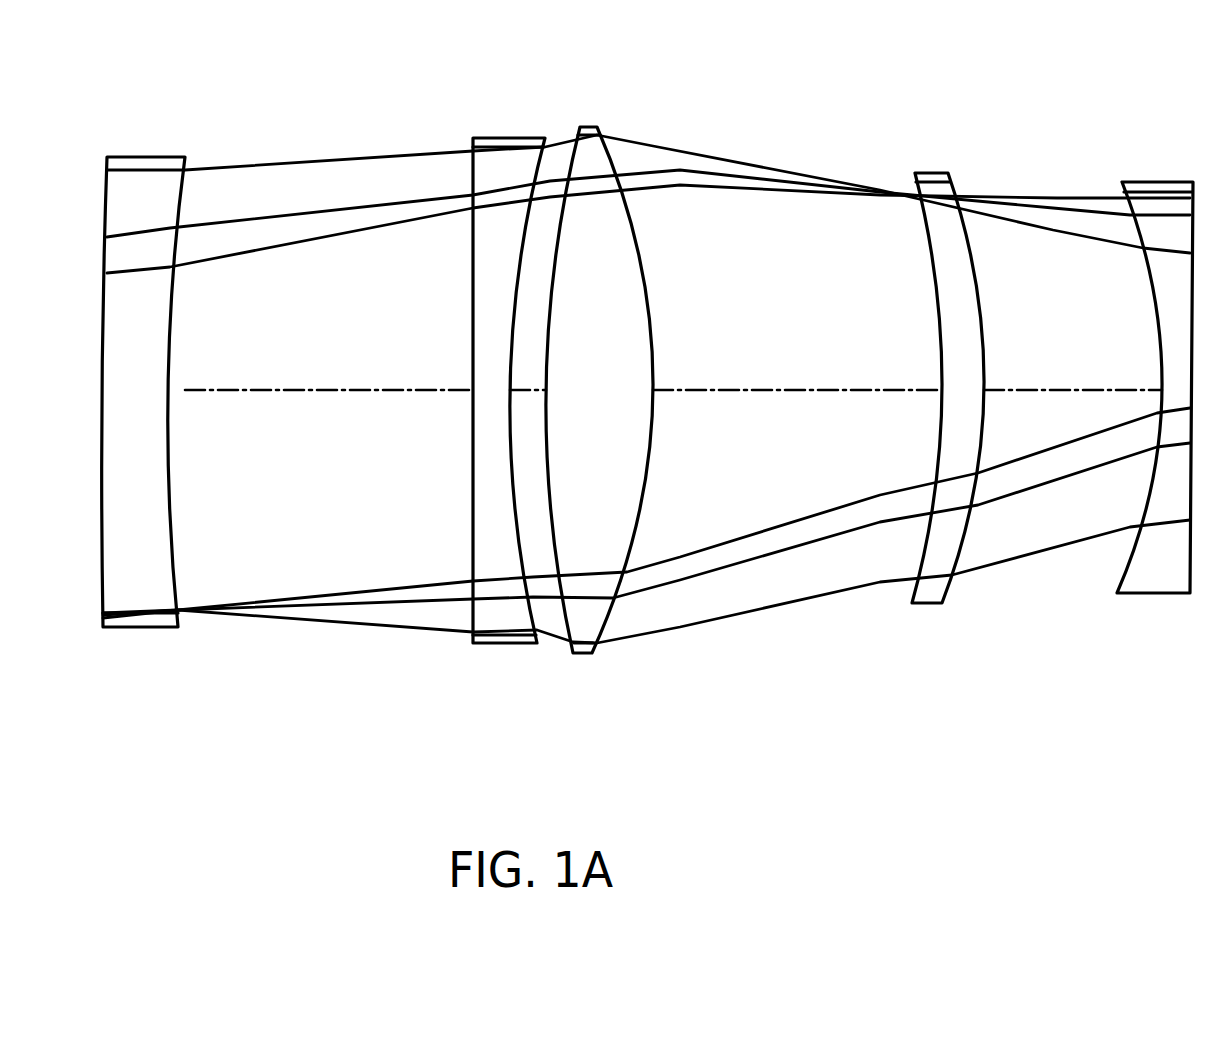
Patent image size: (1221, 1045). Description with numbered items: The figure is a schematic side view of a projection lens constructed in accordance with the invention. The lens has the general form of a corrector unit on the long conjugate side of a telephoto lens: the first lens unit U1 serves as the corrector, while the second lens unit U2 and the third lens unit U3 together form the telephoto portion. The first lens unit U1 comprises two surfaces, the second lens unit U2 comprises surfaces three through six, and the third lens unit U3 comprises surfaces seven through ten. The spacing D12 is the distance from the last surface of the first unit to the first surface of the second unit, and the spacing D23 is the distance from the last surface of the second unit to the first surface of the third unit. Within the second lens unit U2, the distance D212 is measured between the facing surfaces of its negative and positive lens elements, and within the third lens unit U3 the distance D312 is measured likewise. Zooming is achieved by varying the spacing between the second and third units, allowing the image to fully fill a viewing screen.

The first lens unit U1 is at (193, 669).
The second lens unit U2 is at (618, 672).
The third lens unit U3 is at (1200, 671).
The distance between the first and second lens units D12 is at (275, 388).
The distance between the negative and positive lens elements of the second lens unit D212 is at (520, 388).
The distance between the second and third lens units D23 is at (723, 388).
The distance between the negative and positive lens elements of the third lens unit D312 is at (1042, 388).